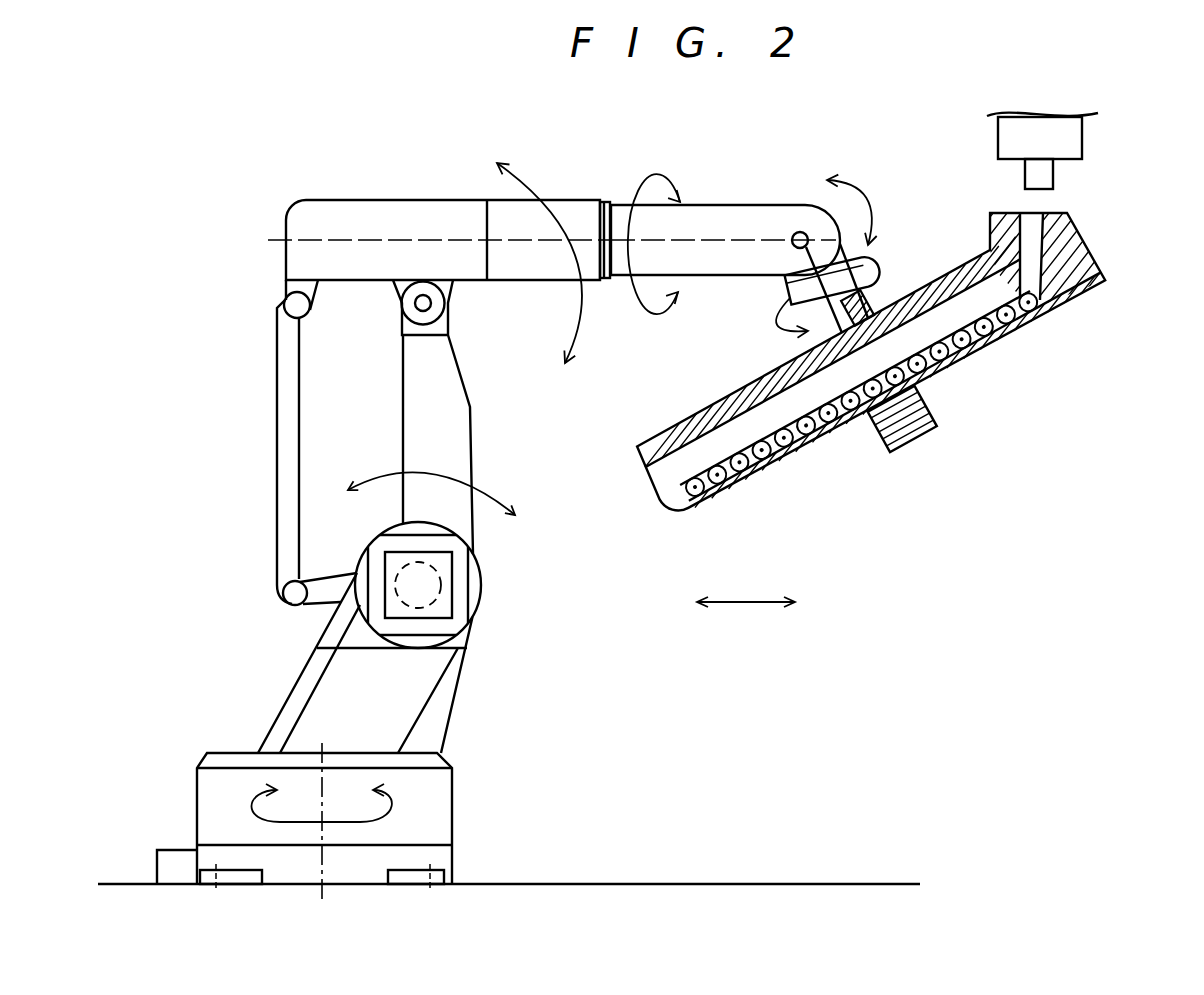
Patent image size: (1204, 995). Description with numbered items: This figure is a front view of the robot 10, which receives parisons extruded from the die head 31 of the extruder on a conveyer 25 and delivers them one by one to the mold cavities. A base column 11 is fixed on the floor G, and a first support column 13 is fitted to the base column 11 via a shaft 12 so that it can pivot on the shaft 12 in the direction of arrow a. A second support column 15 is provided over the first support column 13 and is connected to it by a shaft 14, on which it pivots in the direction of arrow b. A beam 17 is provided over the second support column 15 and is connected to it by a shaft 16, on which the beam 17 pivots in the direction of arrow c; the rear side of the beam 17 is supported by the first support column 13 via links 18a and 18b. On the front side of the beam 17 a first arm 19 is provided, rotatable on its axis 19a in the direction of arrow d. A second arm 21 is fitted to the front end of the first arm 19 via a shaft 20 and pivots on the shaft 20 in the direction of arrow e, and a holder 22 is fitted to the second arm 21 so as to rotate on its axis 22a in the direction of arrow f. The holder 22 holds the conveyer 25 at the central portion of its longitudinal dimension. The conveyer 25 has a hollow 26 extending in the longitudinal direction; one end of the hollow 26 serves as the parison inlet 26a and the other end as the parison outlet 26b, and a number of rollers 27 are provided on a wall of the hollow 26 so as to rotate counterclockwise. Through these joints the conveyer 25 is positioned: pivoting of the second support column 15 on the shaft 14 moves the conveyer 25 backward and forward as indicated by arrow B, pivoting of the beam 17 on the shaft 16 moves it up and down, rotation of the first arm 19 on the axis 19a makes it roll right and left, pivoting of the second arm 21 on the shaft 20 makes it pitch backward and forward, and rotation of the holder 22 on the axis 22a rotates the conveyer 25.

The robot 10 is at (380, 123).
The base column 11 is at (433, 808).
The shaft 12 is at (323, 785).
The first support column 13 is at (410, 697).
The shaft 14 is at (440, 573).
The second support column 15 is at (414, 376).
The shaft 16 is at (413, 308).
The beam 17 is at (360, 207).
The link 18a is at (278, 380).
The link 18b is at (313, 606).
The first arm 19 is at (732, 204).
The axis of the first arm 19a is at (718, 246).
The shaft 20 is at (797, 232).
The second arm 21 is at (792, 289).
The holder 22 is at (922, 400).
The axis of the holder 22a is at (845, 322).
The conveyer 25 is at (667, 428).
The hollow 26 is at (743, 428).
The parison inlet 26a is at (1043, 224).
The parison outlet 26b is at (670, 482).
The rollers 27 is at (812, 438).
The die head 31 is at (1083, 137).
The floor G is at (695, 884).
The arrow B is at (743, 583).
The arrow a is at (306, 803).
The arrow b is at (432, 488).
The arrow c is at (539, 273).
The arrow d is at (661, 236).
The arrow e is at (852, 200).
The arrow f is at (791, 331).